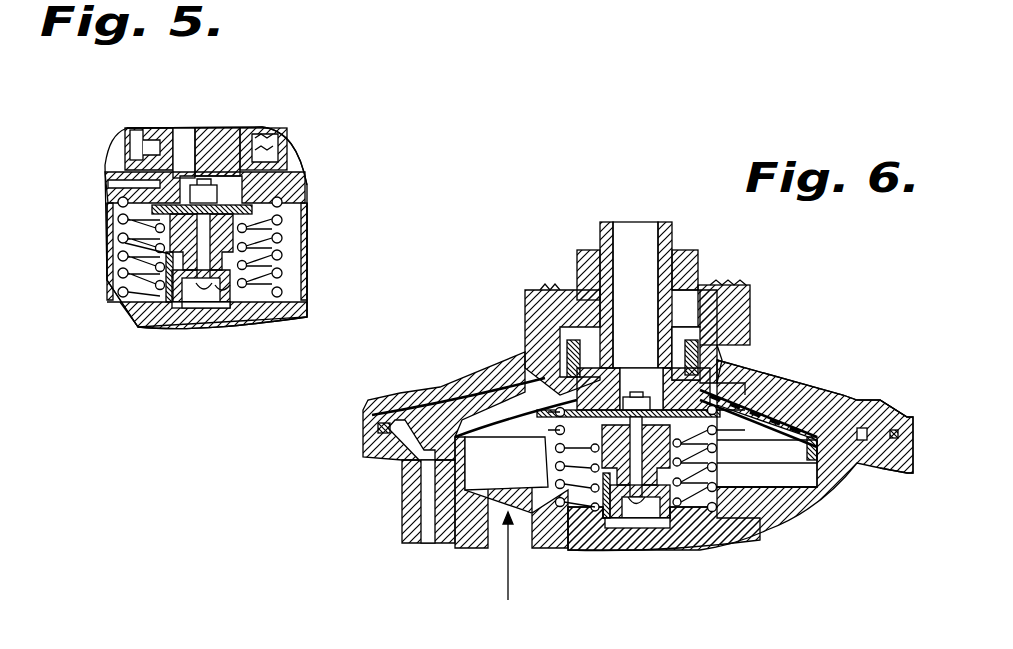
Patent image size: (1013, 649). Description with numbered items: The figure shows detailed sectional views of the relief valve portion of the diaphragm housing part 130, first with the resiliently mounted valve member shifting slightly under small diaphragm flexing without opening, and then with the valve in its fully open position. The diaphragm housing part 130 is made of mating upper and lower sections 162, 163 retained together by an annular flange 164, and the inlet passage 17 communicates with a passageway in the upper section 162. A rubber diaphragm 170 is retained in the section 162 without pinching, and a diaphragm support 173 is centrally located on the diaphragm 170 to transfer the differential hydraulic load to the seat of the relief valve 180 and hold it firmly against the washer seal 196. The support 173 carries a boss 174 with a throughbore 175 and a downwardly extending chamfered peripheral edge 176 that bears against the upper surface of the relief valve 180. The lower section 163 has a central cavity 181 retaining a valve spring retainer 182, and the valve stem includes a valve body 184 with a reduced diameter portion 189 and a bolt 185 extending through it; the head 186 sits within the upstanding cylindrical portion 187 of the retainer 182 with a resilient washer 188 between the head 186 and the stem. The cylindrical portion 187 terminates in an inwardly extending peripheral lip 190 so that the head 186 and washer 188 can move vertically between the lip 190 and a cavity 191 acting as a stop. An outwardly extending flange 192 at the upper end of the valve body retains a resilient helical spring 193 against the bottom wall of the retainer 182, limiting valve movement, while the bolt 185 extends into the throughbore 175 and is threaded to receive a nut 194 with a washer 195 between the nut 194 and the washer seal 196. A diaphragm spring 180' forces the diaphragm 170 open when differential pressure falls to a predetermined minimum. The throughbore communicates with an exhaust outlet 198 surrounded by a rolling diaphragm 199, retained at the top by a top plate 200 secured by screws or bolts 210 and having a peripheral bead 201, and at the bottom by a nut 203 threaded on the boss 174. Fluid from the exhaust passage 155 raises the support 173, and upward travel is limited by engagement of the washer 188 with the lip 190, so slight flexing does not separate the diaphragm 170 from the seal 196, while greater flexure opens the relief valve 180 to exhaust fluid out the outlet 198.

In FIG. 6, the inlet passage 17 is at (410, 520).
In FIG. 5, the diaphragm housing part 130 is at (78, 185).
In FIG. 6, the diaphragm housing part 130 is at (822, 307).
In FIG. 6, the exhaust passage 155 is at (495, 545).
In FIG. 5, the upper section 162 is at (285, 160).
In FIG. 6, the upper section 162 is at (810, 385).
In FIG. 6, the lower section 163 is at (840, 478).
In FIG. 6, the annular flange 164 is at (915, 435).
In FIG. 5, the diaphragm 170 is at (115, 170).
In FIG. 6, the diaphragm 170 is at (760, 395).
In FIG. 6, the diaphragm support 173 is at (440, 440).
In FIG. 5, the boss 174 is at (250, 195).
In FIG. 6, the boss 174 is at (720, 355).
In FIG. 5, the throughbore 175 is at (212, 175).
In FIG. 6, the throughbore 175 is at (540, 365).
In FIG. 6, the chamfered peripheral edge 176 is at (738, 380).
In FIG. 5, the relief valve 180 is at (279, 250).
In FIG. 6, the relief valve 180 is at (594, 410).
In FIG. 5, the diaphragm spring 180' is at (315, 248).
In FIG. 6, the diaphragm spring 180' is at (767, 451).
In FIG. 6, the central cavity 181 is at (770, 490).
In FIG. 5, the valve spring retainer 182 is at (272, 310).
In FIG. 6, the valve spring retainer 182 is at (700, 535).
In FIG. 6, the valve body 184 is at (580, 465).
In FIG. 5, the bolt 185 is at (150, 300).
In FIG. 6, the bolt 185 is at (713, 490).
In FIG. 5, the head 186 is at (205, 308).
In FIG. 6, the head 186 is at (640, 530).
In FIG. 5, the cylindrical portion 187 is at (232, 300).
In FIG. 6, the cylindrical portion 187 is at (630, 510).
In FIG. 6, the resilient washer 188 is at (680, 520).
In FIG. 6, the reduced diameter portion 189 is at (600, 500).
In FIG. 5, the peripheral lip 190 is at (150, 250).
In FIG. 5, the cavity 191 is at (186, 306).
In FIG. 5, the flange 192 is at (118, 228).
In FIG. 5, the helical spring 193 is at (168, 275).
In FIG. 6, the helical spring 193 is at (600, 488).
In FIG. 5, the nut 194 is at (208, 182).
In FIG. 5, the washer 195 is at (186, 175).
In FIG. 5, the washer seal 196 is at (252, 212).
In FIG. 6, the exhaust outlet 198 is at (650, 300).
In FIG. 5, the rolling diaphragm 199 is at (252, 150).
In FIG. 6, the rolling diaphragm 199 is at (700, 330).
In FIG. 6, the top plate 200 is at (578, 275).
In FIG. 6, the peripheral bead 201 is at (672, 300).
In FIG. 5, the nut 203 is at (137, 132).
In FIG. 6, the nut 203 is at (540, 340).
In FIG. 6, the screws or bolts 210 is at (540, 280).